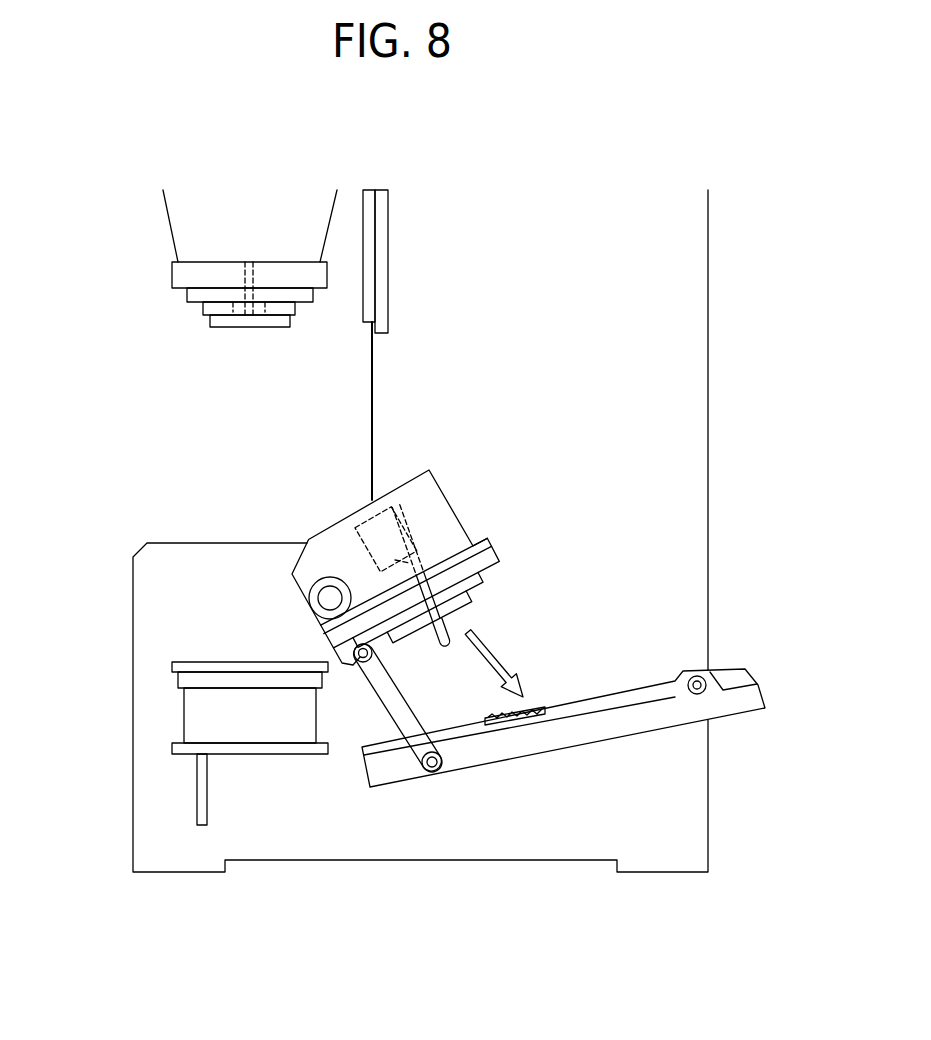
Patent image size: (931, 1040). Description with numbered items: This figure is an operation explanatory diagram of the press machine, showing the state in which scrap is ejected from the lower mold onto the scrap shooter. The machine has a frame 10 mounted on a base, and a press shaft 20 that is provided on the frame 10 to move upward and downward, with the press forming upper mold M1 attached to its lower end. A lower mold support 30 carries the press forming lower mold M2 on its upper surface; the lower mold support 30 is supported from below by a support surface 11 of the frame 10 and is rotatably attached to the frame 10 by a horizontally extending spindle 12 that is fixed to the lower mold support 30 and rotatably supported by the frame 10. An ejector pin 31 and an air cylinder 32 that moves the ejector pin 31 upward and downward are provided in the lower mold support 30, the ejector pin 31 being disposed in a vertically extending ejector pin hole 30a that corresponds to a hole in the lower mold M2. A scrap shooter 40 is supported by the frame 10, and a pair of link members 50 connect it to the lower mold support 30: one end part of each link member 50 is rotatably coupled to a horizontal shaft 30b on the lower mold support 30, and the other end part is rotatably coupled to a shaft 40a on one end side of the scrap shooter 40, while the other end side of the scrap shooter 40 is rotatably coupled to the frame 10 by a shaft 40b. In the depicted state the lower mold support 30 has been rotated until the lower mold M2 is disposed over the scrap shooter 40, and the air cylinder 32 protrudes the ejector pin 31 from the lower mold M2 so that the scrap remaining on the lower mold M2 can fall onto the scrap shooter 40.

The frame 10 is at (708, 352).
The support surface 11 is at (200, 663).
The spindle 12 is at (310, 597).
The press shaft 20 is at (167, 208).
The upper mold M1 is at (210, 317).
The lower mold support 30 is at (323, 530).
The ejector pin hole 30a is at (410, 563).
The shaft 30b is at (345, 650).
The ejector pin 31 is at (450, 631).
The air cylinder 32 is at (408, 510).
The lower mold M2 is at (467, 597).
The scrap shooter 40 is at (602, 743).
The shaft 40a is at (420, 773).
The shaft 40b is at (692, 670).
The link member 50 is at (407, 690).